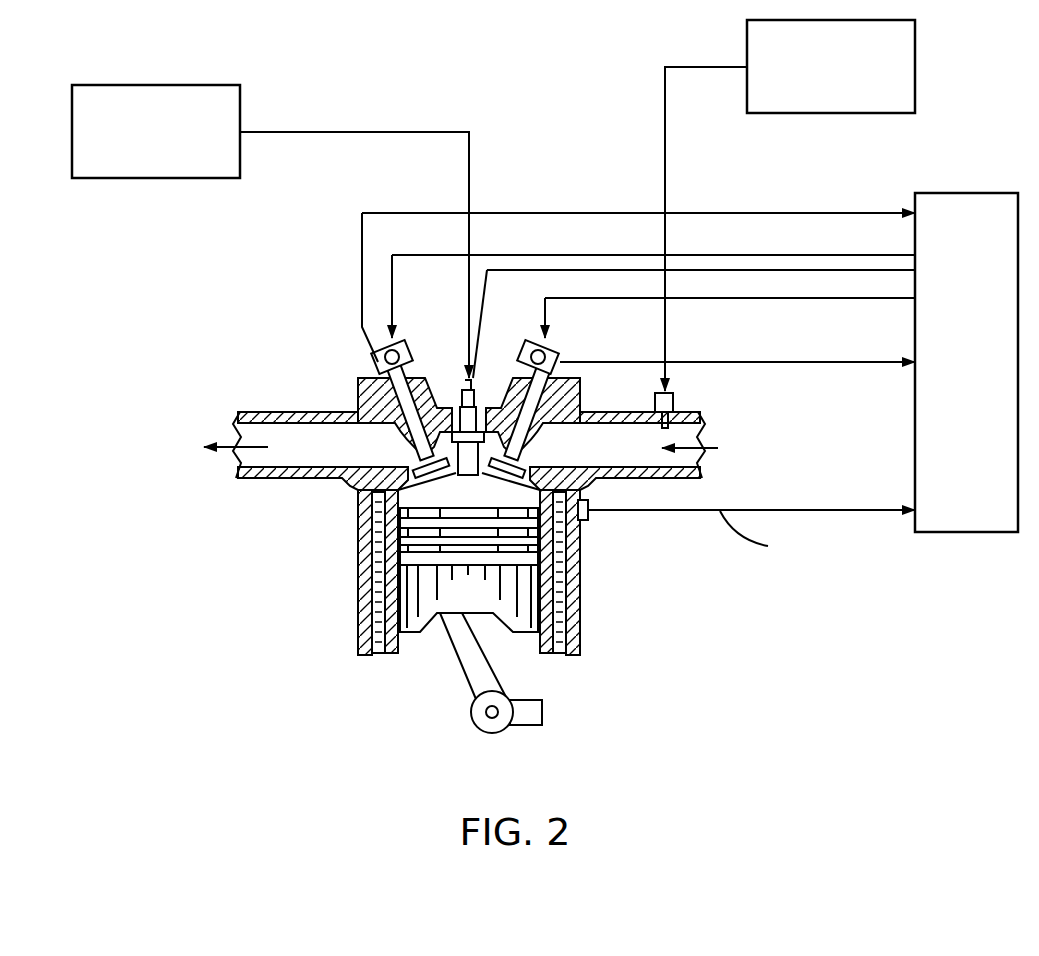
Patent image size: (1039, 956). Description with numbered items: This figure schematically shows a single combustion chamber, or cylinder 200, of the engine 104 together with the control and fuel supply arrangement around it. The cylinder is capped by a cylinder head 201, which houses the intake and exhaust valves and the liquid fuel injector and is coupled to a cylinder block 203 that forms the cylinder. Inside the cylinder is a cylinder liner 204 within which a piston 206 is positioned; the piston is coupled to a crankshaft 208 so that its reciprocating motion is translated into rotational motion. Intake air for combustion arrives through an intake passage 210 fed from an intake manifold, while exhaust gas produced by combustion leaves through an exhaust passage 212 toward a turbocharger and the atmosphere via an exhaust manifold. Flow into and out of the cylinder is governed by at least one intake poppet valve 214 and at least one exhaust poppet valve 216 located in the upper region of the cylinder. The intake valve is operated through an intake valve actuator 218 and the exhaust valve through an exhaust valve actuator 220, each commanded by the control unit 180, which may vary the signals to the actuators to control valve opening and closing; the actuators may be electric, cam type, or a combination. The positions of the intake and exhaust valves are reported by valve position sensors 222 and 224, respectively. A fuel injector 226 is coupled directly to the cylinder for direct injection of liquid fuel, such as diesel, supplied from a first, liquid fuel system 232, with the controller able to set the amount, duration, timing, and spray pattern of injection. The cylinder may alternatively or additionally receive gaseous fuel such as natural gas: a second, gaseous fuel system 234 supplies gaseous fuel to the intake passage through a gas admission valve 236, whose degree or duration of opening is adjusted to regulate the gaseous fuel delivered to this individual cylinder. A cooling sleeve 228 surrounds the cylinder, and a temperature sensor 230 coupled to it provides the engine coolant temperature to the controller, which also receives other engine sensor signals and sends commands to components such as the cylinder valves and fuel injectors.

The engine 104 is at (510, 185).
The control unit 180 is at (966, 362).
The cylinder 200 is at (469, 490).
The cylinder head 201 is at (293, 332).
The cylinder block 203 is at (637, 596).
The cylinder liner 204 is at (400, 656).
The piston 206 is at (450, 598).
The crankshaft 208 is at (513, 700).
The intake passage 210 is at (696, 451).
The exhaust passage 212 is at (238, 451).
The intake poppet valve 214 is at (527, 464).
The exhaust poppet valve 216 is at (416, 466).
The intake valve actuator 218 is at (533, 348).
The exhaust valve actuator 220 is at (400, 348).
The intake valve position sensor 222 is at (560, 360).
The exhaust valve position sensor 224 is at (377, 364).
The fuel injector 226 is at (460, 400).
The cooling sleeve 228 is at (565, 603).
The temperature sensor 230 is at (590, 518).
The liquid fuel system 232 is at (270, 231).
The gaseous fuel system 234 is at (790, 205).
The gas admission valve 236 is at (674, 400).